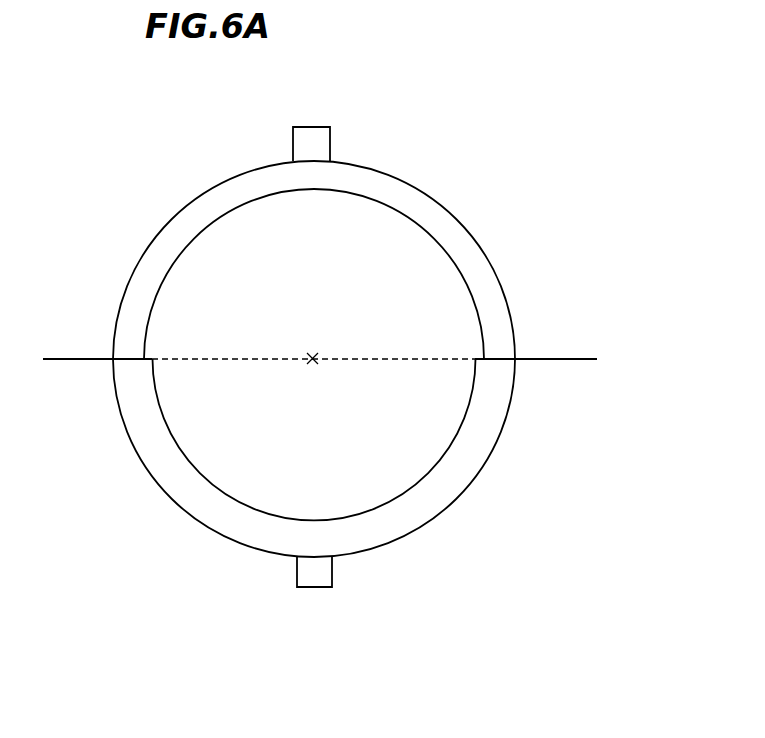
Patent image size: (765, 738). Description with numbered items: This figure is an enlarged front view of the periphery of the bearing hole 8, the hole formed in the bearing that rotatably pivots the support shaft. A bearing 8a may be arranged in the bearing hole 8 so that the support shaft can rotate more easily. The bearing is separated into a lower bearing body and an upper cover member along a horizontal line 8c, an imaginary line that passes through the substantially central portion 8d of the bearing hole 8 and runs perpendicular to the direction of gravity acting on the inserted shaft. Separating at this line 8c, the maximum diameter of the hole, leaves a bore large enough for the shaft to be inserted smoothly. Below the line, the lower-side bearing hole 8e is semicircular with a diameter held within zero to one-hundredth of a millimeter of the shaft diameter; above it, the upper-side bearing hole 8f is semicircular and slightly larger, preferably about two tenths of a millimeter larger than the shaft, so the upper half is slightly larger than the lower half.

The bearing hole 8 is at (423, 282).
The bearing 8a is at (502, 313).
The horizontal line 8c is at (205, 357).
The central portion 8d is at (312, 358).
The lower-side bearing hole 8e is at (345, 513).
The upper-side bearing hole 8f is at (368, 210).